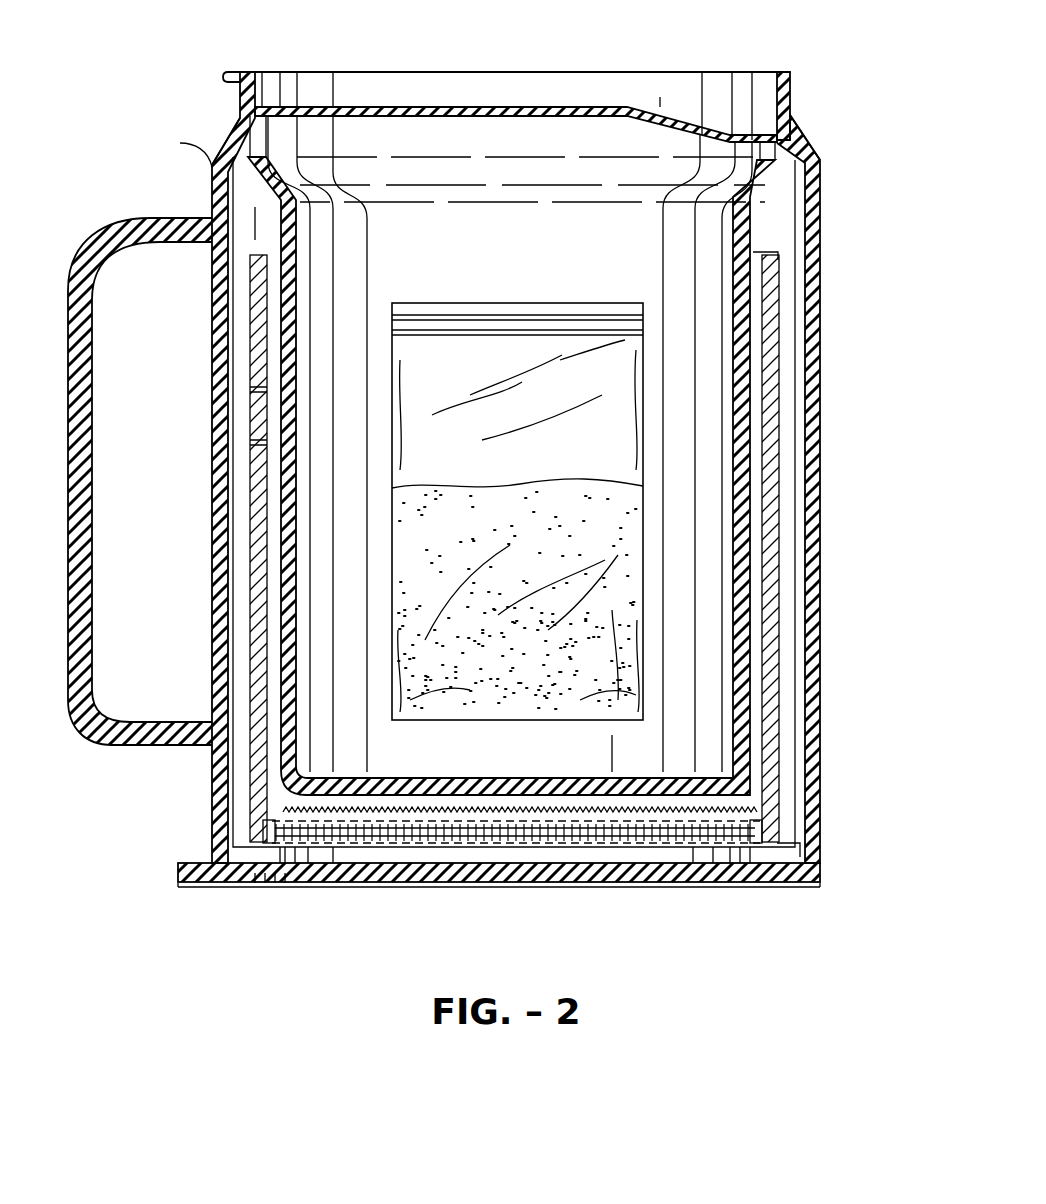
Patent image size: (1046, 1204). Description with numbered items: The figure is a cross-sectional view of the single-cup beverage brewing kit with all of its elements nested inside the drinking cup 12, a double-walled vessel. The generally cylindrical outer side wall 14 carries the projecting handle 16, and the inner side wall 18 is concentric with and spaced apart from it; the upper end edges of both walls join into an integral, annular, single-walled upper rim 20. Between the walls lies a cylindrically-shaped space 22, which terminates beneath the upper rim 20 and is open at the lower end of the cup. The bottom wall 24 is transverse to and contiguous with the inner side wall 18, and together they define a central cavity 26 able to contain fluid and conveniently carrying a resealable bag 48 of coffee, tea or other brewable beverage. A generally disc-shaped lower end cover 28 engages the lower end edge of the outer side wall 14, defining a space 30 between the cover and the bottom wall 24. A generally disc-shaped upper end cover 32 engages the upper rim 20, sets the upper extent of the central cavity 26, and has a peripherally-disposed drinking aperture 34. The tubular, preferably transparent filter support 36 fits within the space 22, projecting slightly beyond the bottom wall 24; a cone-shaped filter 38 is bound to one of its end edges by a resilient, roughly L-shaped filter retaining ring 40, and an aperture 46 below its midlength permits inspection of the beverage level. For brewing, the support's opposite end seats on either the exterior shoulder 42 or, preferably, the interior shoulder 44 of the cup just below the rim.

The drinking cup 12 is at (852, 717).
The outer side wall 14 is at (208, 594).
The handle 16 is at (141, 222).
The inner side wall 18 is at (310, 293).
The upper rim 20 is at (788, 93).
The cylindrically-shaped space 22 is at (247, 322).
The bottom wall 24 is at (385, 783).
The central cavity 26 is at (703, 607).
The lower end cover 28 is at (805, 884).
The space 30 is at (340, 863).
The upper end cover 32 is at (420, 78).
The drinking aperture 34 is at (757, 130).
The filter support 36 is at (256, 542).
The cone-shaped filter 38 is at (513, 815).
The filter retaining ring 40 is at (755, 845).
The exterior shoulder 42 is at (222, 168).
The interior shoulder 44 is at (295, 192).
The aperture 46 is at (268, 420).
The resealable bag 48 is at (485, 320).